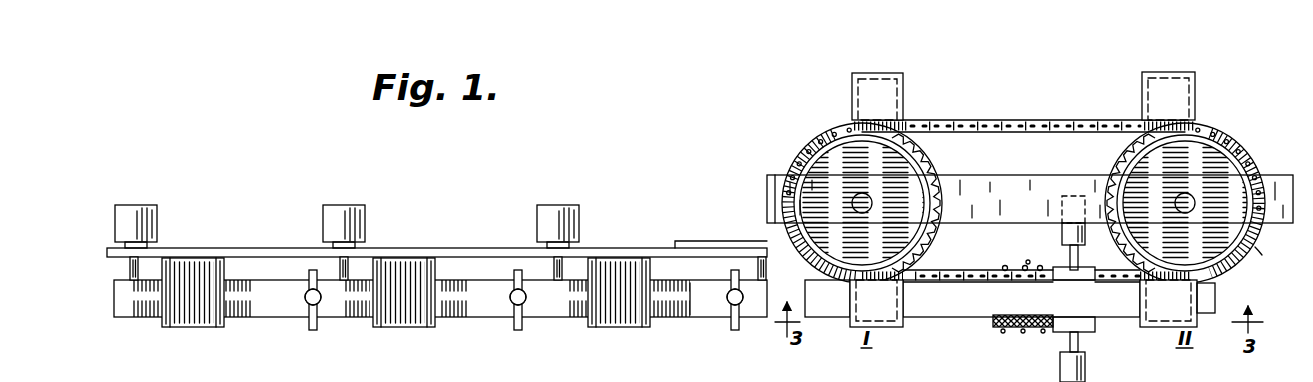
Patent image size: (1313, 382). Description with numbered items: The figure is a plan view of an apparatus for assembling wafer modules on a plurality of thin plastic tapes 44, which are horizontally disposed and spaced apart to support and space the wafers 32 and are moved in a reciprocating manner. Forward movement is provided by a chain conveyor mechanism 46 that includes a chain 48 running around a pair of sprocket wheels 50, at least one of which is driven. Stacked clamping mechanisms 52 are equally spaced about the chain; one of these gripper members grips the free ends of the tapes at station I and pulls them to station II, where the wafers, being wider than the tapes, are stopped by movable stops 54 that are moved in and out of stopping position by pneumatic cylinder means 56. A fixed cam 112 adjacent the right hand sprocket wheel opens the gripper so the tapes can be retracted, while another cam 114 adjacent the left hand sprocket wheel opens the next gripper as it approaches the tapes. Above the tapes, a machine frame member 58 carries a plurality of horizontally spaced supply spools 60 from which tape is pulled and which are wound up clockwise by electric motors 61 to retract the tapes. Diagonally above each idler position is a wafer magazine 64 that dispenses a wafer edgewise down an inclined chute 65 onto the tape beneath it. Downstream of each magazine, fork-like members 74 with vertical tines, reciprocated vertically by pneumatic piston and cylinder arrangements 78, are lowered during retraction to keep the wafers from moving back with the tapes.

The wafers 32 is at (1000, 268).
The plastic tapes 44 is at (487, 312).
The chain conveyor mechanism 46 is at (1247, 130).
The chain 48 is at (1097, 119).
The sprocket wheels 50 is at (920, 170).
The clamping mechanisms 52 is at (905, 83).
The movable stops 54 is at (1062, 267).
The pneumatic cylinder means 56 is at (1060, 212).
The machine frame member 58 is at (457, 255).
The supply spools 60 is at (757, 313).
The electric motors 61 is at (157, 219).
The wafer magazine 64 is at (644, 322).
The inclined chute 65 is at (681, 320).
The fork-like members 74 is at (309, 332).
The pneumatic piston and cylinder arrangements 78 is at (305, 297).
The fixed cams 112 is at (1254, 247).
The cam 114 is at (768, 245).